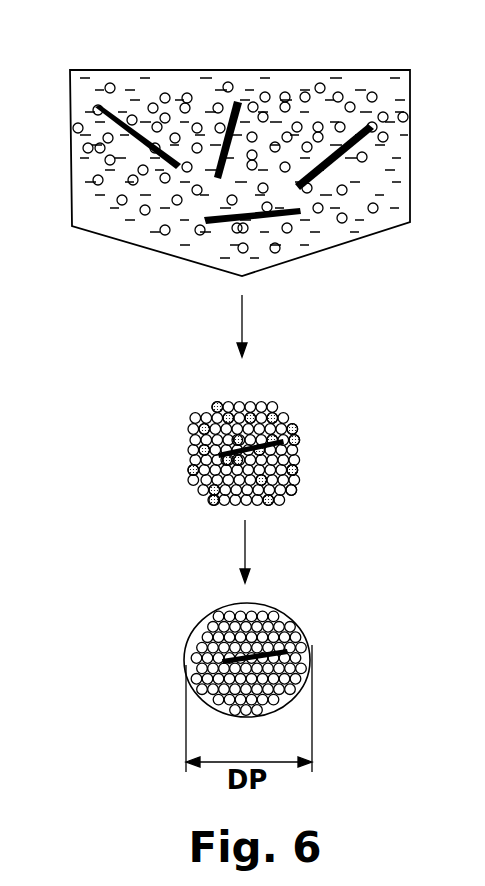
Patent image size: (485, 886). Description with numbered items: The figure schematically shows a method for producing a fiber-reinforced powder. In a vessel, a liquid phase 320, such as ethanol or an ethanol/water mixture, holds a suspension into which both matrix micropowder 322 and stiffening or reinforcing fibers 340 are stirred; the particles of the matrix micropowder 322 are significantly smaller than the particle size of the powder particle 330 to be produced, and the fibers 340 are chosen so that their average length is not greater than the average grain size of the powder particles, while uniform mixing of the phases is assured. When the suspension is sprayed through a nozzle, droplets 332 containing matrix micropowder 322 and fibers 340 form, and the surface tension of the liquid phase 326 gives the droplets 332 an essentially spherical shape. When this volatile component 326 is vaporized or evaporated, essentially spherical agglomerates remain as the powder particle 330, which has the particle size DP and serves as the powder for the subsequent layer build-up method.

The liquid phase 320 is at (198, 98).
The matrix micropowder 322 is at (372, 92).
The liquid phase 326 is at (293, 416).
The powder particle 330 is at (285, 628).
The droplets 332 is at (288, 485).
The reinforcing fibers 340 is at (300, 222).